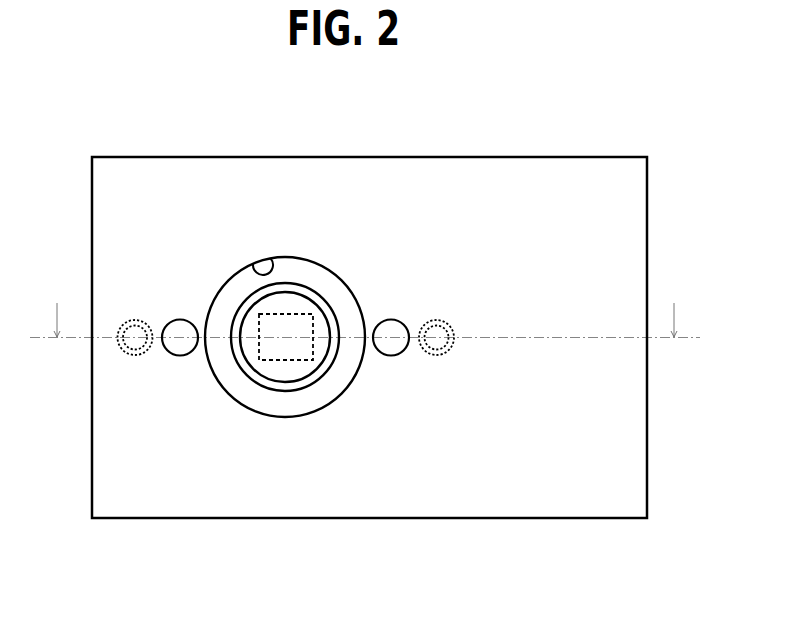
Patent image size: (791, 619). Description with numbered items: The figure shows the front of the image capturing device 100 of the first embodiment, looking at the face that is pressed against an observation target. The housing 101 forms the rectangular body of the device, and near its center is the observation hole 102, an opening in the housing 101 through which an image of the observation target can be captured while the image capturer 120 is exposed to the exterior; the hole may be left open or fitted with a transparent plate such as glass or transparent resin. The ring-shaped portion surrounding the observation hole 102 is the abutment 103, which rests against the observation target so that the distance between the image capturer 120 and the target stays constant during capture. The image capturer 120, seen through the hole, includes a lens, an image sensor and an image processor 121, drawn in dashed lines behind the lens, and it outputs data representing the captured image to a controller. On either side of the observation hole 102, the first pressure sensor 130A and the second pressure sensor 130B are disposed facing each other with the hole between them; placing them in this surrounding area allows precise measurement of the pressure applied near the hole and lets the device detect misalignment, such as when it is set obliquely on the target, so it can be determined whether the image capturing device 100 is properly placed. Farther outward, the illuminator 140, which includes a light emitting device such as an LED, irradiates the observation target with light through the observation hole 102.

The image capturing device 100 is at (550, 140).
The housing 101 is at (427, 157).
The observation hole 102 is at (257, 271).
The abutment 103 is at (285, 253).
The image capturer 120 is at (317, 305).
The image processor 121 is at (285, 313).
The first pressure sensor 130A is at (393, 357).
The second pressure sensor 130B is at (182, 355).
The illuminator 140 is at (135, 320).